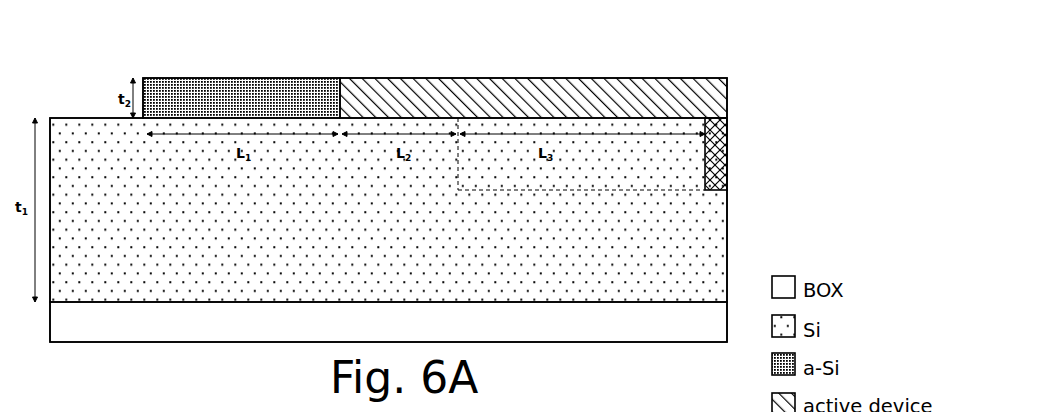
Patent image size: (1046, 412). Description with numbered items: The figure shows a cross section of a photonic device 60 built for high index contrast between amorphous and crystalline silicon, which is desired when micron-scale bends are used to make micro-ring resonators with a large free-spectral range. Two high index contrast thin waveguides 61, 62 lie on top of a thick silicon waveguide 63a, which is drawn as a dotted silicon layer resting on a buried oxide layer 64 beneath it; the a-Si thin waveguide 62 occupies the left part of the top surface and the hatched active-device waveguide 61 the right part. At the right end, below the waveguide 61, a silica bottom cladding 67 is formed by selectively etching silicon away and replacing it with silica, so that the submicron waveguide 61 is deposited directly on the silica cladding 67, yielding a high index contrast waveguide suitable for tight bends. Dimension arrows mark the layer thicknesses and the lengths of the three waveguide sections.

The photonic device 60 is at (738, 98).
The high index contrast thin waveguide 61 is at (432, 78).
The high index contrast thin waveguide 62 is at (205, 78).
The thick silicon waveguide 63a is at (93, 227).
The buried oxide layer 64 is at (172, 317).
The silica bottom cladding 67 is at (728, 165).